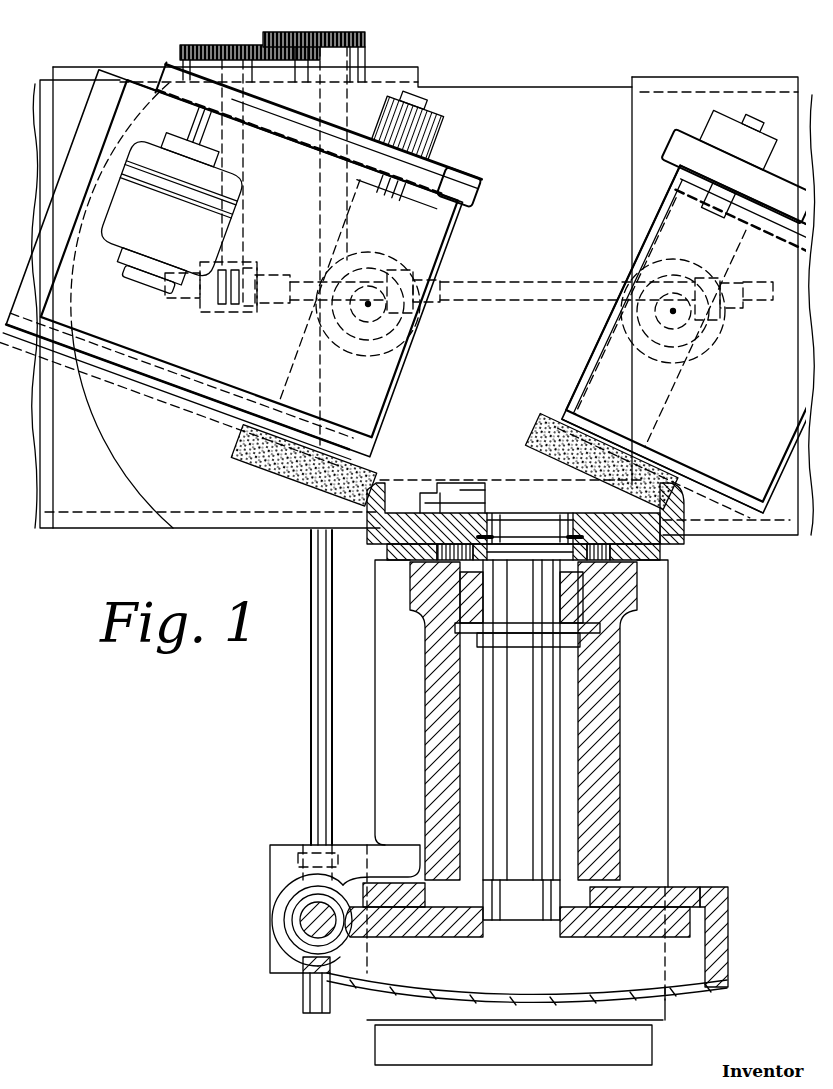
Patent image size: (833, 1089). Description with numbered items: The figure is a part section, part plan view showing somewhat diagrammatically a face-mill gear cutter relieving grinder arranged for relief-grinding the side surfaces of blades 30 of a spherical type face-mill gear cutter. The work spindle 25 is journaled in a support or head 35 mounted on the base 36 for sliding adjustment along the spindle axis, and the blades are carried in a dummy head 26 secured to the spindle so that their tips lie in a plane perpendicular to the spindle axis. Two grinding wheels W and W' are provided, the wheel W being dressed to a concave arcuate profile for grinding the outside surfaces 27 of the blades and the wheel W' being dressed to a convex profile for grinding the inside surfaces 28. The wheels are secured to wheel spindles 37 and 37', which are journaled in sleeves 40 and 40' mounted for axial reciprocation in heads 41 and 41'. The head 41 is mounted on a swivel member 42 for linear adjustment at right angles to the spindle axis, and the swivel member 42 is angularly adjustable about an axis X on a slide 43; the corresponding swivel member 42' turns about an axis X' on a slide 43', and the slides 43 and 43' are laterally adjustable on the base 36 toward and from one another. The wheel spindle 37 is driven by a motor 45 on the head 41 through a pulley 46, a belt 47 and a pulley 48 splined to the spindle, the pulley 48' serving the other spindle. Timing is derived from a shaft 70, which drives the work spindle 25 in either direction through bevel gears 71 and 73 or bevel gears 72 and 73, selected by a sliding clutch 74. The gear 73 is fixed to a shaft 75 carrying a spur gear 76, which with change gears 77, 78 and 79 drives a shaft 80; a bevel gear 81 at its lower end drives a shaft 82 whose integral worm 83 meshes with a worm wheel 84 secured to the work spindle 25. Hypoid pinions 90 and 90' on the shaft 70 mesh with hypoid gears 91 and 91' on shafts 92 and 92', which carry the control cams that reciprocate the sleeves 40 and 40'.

The work spindle 25 is at (540, 748).
The dummy head 26 is at (420, 483).
The outside surfaces 27 is at (684, 490).
The inside surfaces 28 is at (382, 485).
The blades 30 is at (680, 547).
The support or head 35 is at (605, 810).
The base 36 is at (40, 530).
The wheel spindle 37 is at (416, 146).
The wheel spindle 37' is at (749, 134).
The sleeve 40 is at (249, 258).
The sleeve 40' is at (699, 333).
The head or support 41 is at (179, 391).
The head or support 41' is at (660, 470).
The swivel member 42 is at (234, 247).
The swivel member 42' is at (697, 343).
The slide 43 is at (342, 318).
The slide 43' is at (715, 326).
The motor 45 is at (130, 243).
The pulley 46 is at (172, 72).
The belt 47 is at (283, 127).
The pulley 48 is at (464, 169).
The pulley 48' is at (738, 161).
The shaft 70 is at (183, 292).
The bevel gear 71 is at (203, 307).
The bevel gear 72 is at (247, 310).
The bevel gear 73 is at (243, 263).
The sliding clutch 74 is at (230, 300).
The shaft 75 is at (238, 222).
The spur gear 76 is at (217, 60).
The spur gear 77 is at (283, 85).
The spur gear 78 is at (263, 38).
The spur gear 79 is at (365, 40).
The shaft 80 is at (320, 703).
The bevel gear 81 is at (302, 868).
The shaft 82 is at (307, 923).
The worm 83 is at (333, 937).
The worm wheel 84 is at (433, 930).
The hypoid pinion 90 is at (400, 273).
The hypoid pinion 90' is at (713, 279).
The hypoid gear 91 is at (368, 294).
The hypoid gear 91' is at (687, 311).
The shaft 92 is at (361, 322).
The shaft 92' is at (672, 333).
The axis X is at (376, 265).
The axis X' is at (682, 270).
The grinding wheel W is at (298, 465).
The grinding wheel W' is at (593, 448).